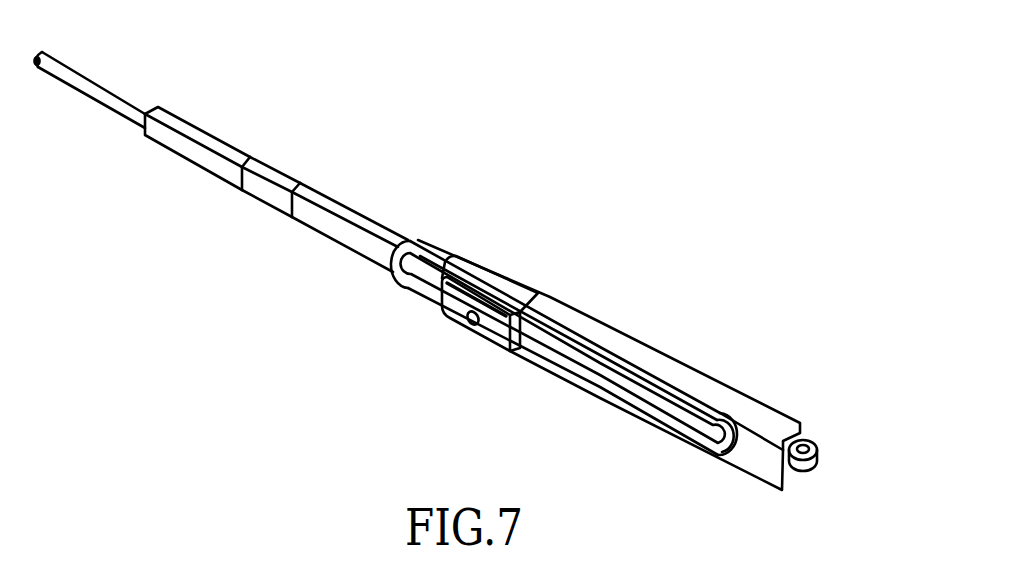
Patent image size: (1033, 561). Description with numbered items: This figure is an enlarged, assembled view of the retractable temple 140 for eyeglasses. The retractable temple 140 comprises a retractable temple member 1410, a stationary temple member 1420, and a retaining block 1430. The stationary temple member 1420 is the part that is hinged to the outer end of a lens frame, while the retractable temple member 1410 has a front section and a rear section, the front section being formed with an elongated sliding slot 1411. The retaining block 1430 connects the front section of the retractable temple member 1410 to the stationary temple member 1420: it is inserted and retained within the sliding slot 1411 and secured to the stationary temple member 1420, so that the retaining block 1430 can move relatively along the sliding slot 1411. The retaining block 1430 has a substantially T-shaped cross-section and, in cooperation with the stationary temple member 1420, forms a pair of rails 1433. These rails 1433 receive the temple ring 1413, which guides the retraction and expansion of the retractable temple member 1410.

The retractable temple 140 is at (476, 203).
The retractable temple member 1410 is at (218, 172).
The sliding slot 1411 is at (564, 376).
The temple ring 1413 is at (714, 457).
The stationary temple member 1420 is at (648, 350).
The retaining block 1430 is at (512, 321).
The rails 1433 is at (530, 296).